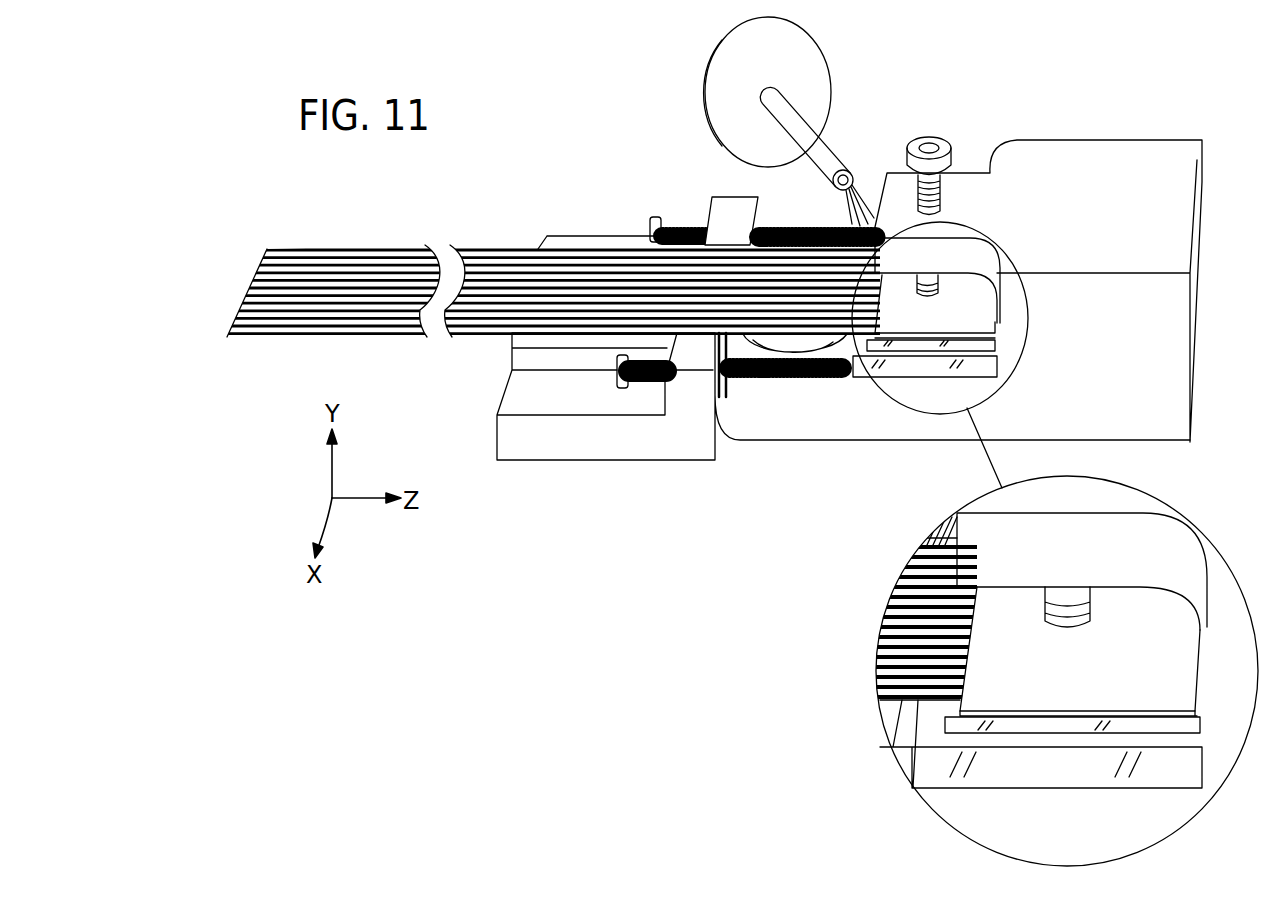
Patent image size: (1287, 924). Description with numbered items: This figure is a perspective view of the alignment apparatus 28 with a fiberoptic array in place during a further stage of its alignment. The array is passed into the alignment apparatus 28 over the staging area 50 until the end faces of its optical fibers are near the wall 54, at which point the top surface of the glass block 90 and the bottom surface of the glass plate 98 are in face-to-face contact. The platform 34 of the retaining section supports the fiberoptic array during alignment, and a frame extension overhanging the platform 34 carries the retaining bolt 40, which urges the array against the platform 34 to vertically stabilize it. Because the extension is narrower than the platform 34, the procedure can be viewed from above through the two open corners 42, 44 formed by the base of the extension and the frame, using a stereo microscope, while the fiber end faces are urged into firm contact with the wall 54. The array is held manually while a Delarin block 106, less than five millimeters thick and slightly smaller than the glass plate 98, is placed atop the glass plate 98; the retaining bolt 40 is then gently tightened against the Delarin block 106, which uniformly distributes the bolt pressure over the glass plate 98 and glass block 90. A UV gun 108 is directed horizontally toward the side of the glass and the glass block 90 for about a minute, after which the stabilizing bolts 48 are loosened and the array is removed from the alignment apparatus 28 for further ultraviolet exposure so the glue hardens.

The alignment apparatus 28 is at (1183, 103).
The platform 34 is at (977, 805).
The retaining bolt 40 is at (929, 137).
The open corner 42 is at (998, 173).
The open corner 44 is at (1182, 530).
The stabilizing bolts 48 is at (656, 216).
The staging area 50 is at (541, 249).
The wall 54 is at (1200, 676).
The glass block 90 is at (1088, 773).
The glass plate 98 is at (1198, 728).
The Delarin block 106 is at (1003, 627).
The UV gun 108 is at (820, 63).